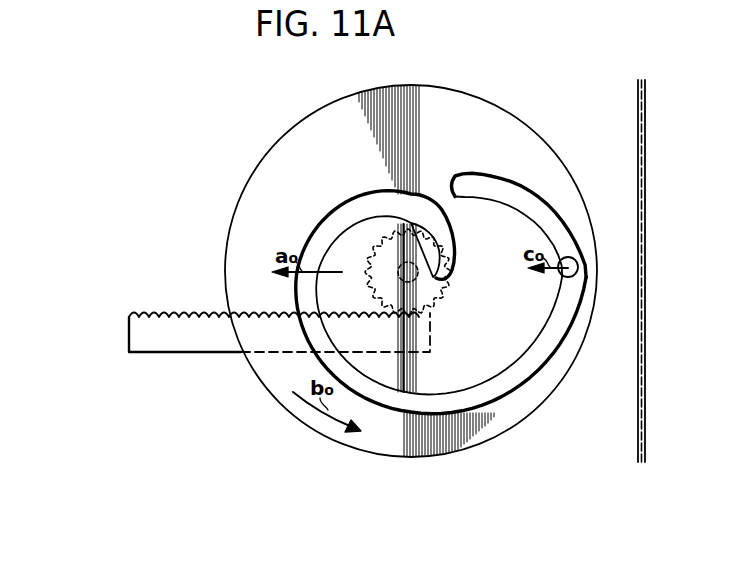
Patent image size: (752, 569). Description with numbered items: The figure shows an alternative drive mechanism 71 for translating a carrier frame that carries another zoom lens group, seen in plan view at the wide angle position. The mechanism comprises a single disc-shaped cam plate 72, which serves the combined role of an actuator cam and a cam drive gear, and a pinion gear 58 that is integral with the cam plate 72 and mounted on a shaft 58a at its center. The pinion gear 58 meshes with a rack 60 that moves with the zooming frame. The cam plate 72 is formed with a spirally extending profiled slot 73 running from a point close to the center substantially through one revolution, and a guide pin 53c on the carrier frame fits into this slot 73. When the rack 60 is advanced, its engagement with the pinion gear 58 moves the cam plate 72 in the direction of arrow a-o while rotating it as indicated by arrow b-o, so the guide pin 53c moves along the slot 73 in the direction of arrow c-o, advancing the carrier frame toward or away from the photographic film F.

The drive mechanism 71 is at (238, 160).
The cam plate 72 is at (243, 218).
The profiled slot 73 is at (480, 186).
The pinion gear 58 is at (438, 234).
The shaft 58a is at (418, 280).
The guide pin 53c is at (569, 257).
The rack 60 is at (169, 328).
The photographic film F is at (638, 133).